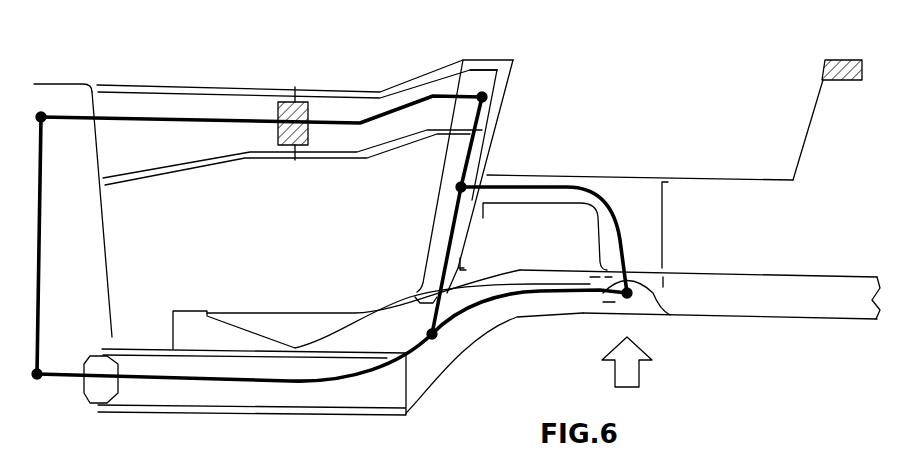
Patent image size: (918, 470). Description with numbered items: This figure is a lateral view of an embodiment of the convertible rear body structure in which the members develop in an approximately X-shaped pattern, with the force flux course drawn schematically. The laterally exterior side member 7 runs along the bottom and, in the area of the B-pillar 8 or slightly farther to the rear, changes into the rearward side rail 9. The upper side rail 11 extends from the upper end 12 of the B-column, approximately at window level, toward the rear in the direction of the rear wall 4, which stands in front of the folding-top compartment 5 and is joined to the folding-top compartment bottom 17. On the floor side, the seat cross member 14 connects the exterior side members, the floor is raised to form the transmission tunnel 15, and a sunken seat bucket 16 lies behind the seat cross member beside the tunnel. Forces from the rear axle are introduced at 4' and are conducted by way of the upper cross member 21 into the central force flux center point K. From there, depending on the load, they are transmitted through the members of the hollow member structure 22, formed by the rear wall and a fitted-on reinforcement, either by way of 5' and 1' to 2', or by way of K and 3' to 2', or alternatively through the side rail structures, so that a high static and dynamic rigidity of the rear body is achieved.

The rear wall 4 is at (515, 64).
The folding-top compartment 5 is at (640, 173).
The side member 7 is at (145, 393).
The B-pillar 8 is at (66, 85).
The rearward side rail 9 is at (849, 307).
The upper side rail 11 is at (227, 103).
The upper end of the B-column 12 is at (97, 143).
The seat cross member 14 is at (190, 310).
The transmission tunnel 15 is at (333, 312).
The seat bucket 16 is at (275, 336).
The folding-top compartment bottom 17 is at (739, 180).
The upper cross member 21 is at (548, 197).
The hollow member structure 22 is at (440, 208).
The force flux path point 1' is at (259, 229).
The force flux path point 2' is at (232, 357).
The force flux path point 3' is at (512, 219).
The force introduction point 4' is at (630, 297).
The force flux path point 5' is at (491, 84).
The central force flux center point K is at (531, 232).